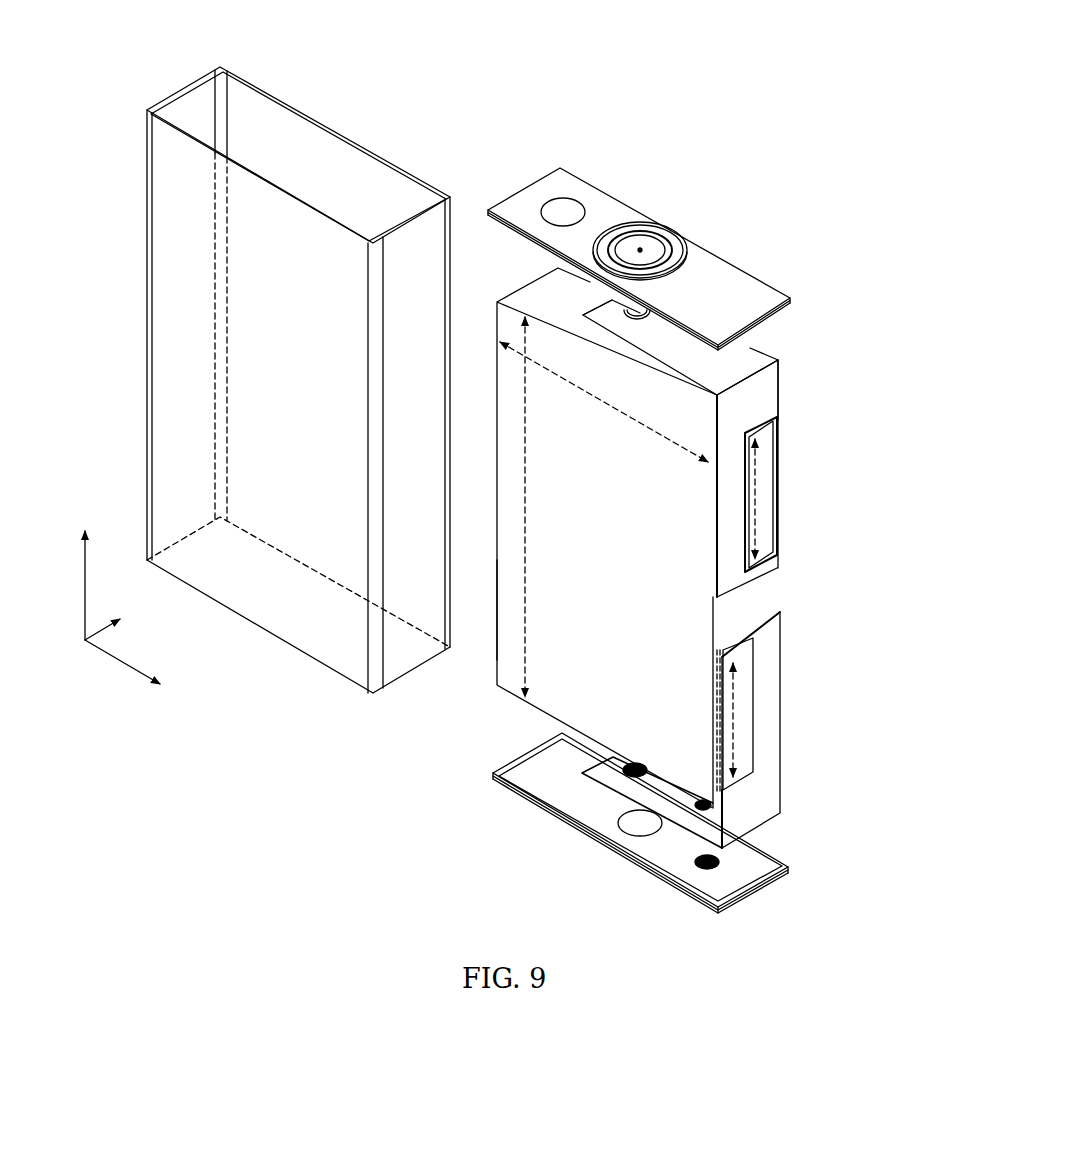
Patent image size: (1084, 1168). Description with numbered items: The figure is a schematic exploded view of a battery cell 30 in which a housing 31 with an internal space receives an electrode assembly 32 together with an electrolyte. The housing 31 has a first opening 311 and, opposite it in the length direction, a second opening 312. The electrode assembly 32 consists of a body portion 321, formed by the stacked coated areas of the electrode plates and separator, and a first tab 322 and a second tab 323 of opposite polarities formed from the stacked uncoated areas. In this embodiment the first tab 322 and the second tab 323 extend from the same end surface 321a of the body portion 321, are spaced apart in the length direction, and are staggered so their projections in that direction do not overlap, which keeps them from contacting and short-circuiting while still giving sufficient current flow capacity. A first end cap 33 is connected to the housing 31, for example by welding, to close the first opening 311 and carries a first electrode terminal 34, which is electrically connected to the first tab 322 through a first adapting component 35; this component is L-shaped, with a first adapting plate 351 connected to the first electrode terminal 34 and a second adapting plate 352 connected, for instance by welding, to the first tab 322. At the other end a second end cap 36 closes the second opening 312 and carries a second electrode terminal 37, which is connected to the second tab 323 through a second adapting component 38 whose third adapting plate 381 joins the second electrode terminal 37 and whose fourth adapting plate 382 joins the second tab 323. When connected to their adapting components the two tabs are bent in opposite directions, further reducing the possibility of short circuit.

The battery cell 30 is at (855, 29).
The housing 31 is at (183, 405).
The first opening 311 is at (295, 615).
The second opening 312 is at (330, 156).
The electrode assembly 32 is at (897, 522).
The body portion 321 is at (670, 558).
The end surface 321a is at (495, 614).
The first tab 322 is at (746, 700).
The second tab 323 is at (762, 485).
The first end cap 33 is at (573, 797).
The first electrode terminal 34 is at (633, 828).
The first adapting component 35 is at (897, 768).
The first adapting plate 351 is at (680, 815).
The second adapting plate 352 is at (767, 772).
The second end cap 36 is at (590, 197).
The second electrode terminal 37 is at (641, 246).
The second adapting component 38 is at (873, 224).
The third adapting plate 381 is at (733, 362).
The fourth adapting plate 382 is at (762, 395).